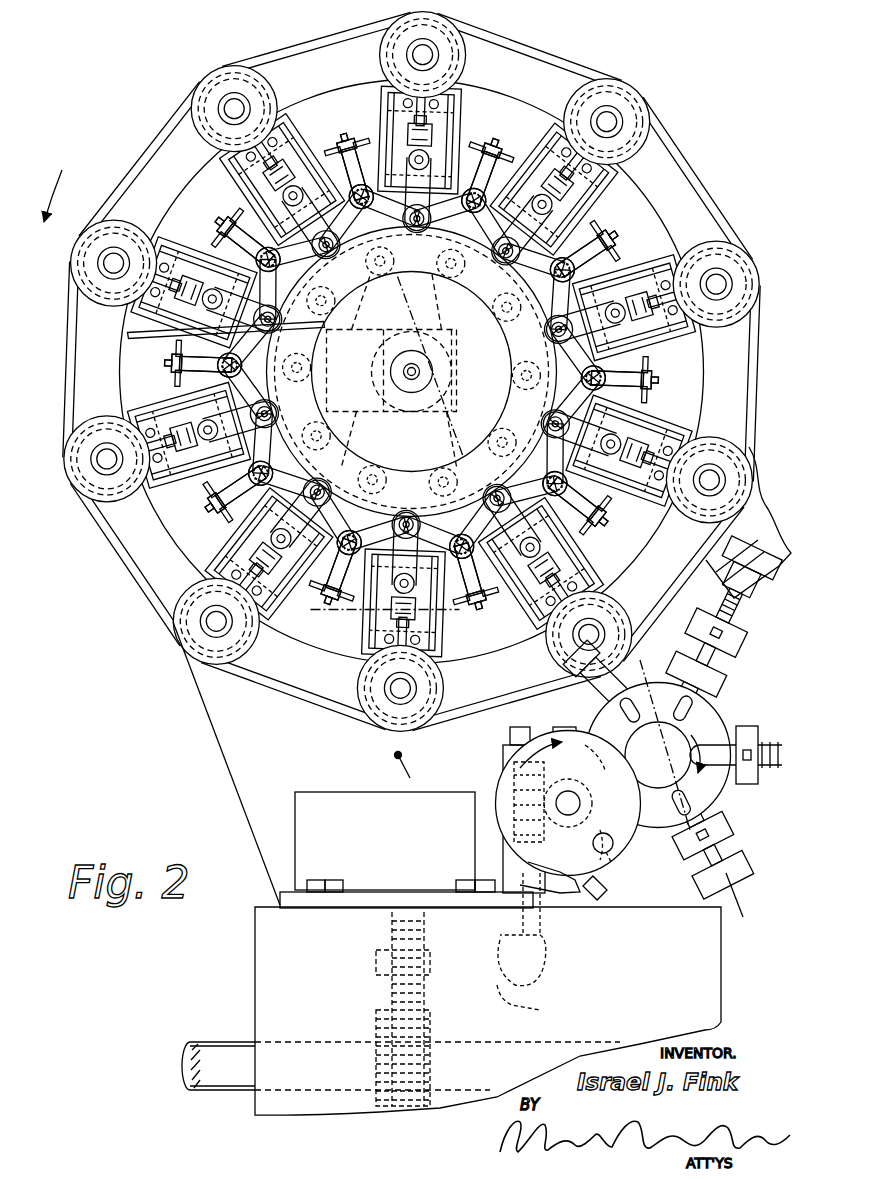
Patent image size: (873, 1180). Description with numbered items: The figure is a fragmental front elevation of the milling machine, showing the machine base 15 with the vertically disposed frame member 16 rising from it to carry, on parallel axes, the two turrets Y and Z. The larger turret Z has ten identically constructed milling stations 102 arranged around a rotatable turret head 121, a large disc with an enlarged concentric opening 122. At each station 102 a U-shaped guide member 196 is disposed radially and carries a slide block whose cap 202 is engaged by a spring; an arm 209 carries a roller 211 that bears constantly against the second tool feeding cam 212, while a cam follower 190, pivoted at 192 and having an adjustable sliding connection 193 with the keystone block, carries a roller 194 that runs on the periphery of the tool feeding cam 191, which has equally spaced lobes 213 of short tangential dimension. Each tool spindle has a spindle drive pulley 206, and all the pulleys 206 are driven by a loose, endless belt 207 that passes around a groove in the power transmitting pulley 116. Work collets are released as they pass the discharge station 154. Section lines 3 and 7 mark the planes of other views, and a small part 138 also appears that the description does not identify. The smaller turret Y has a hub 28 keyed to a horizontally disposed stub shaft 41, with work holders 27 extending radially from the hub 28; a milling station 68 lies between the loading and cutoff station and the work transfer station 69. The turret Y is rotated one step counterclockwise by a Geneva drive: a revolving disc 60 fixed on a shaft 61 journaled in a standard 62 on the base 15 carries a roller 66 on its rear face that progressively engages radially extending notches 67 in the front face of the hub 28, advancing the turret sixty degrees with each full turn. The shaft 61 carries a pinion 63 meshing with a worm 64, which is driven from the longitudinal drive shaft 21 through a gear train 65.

The milling station 102 is at (198, 143).
The spindle drive pulley 206 is at (86, 283).
The endless belt 207 is at (133, 573).
The work discharge station 154 is at (343, 679).
The turret head 121 is at (412, 344).
The second tool feeding cam 212 is at (412, 372).
The lobes 213 is at (409, 369).
The power transmitting pulley 116 is at (433, 355).
The tool feeding cam 191 is at (446, 376).
The roller 194 is at (412, 371).
The U-shaped guide member 196 is at (411, 371).
The cap 202 is at (222, 74).
The arm 209 is at (411, 371).
The roller 211 is at (411, 371).
The adjustable sliding connection 193 is at (465, 372).
The pivot 192 is at (414, 389).
The cam follower 190 is at (455, 371).
The concentric opening 122 is at (196, 340).
The milling station 68 is at (786, 478).
The work holder 27 is at (758, 651).
The work transfer station 69 is at (576, 692).
The stub shaft 41 is at (680, 760).
The notches 67 is at (676, 704).
The hub 28 is at (733, 783).
The frame member 16 is at (242, 766).
The pinion 63 is at (512, 771).
The shaft 61 is at (575, 812).
The worm 64 is at (512, 826).
The roller 66 is at (625, 863).
The revolving disc 60 is at (552, 866).
The standard 62 is at (592, 893).
The machine base 15 is at (270, 965).
The longitudinal drive shaft 21 is at (220, 1086).
The gear train 65 is at (506, 986).
The pin 138 is at (404, 764).
The section line 3 is at (406, 367).
The section line 7 is at (384, 624).
The turret Y is at (742, 709).
The turret Z is at (226, 60).